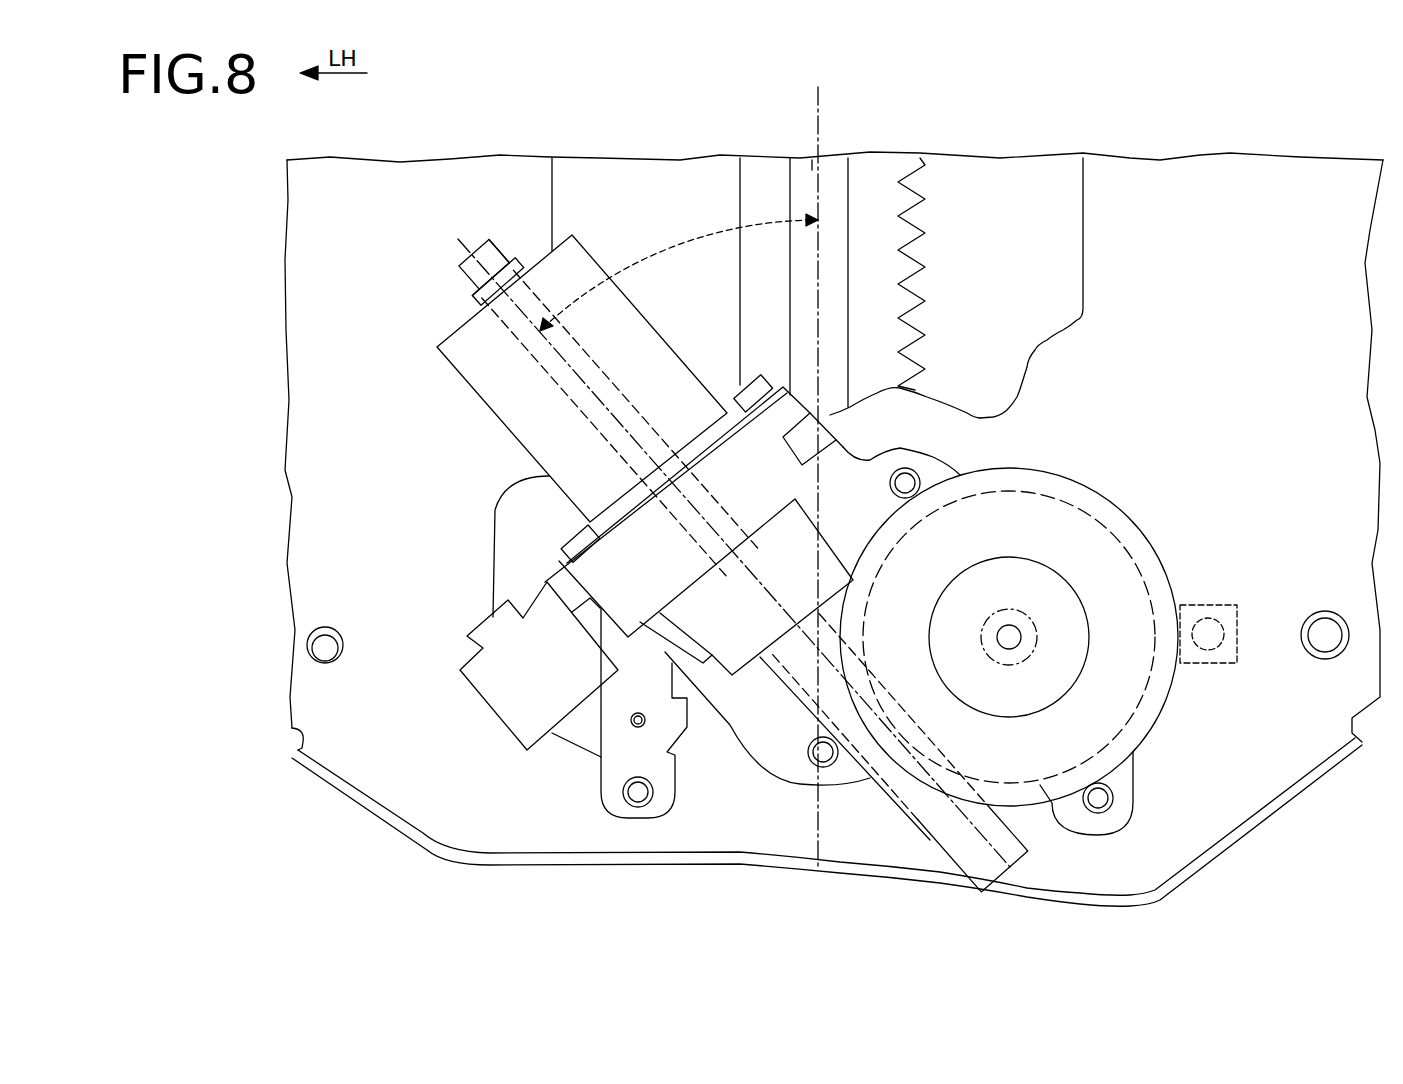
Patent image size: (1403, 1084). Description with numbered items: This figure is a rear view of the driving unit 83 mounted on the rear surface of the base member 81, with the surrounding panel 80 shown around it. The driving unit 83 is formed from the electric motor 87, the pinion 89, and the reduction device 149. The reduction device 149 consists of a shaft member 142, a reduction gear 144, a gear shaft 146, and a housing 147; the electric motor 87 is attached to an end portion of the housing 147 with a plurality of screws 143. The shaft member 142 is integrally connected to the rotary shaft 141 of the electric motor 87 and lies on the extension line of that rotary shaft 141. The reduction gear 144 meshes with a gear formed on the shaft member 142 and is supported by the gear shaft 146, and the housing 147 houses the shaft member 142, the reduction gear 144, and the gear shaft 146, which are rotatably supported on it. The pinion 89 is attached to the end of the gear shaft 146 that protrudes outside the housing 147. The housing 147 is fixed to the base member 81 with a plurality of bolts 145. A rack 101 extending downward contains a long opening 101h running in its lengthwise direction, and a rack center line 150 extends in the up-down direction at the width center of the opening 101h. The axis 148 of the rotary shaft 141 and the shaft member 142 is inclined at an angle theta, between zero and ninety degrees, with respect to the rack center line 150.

The door panel 80 is at (1274, 132).
The base member 81 is at (1168, 175).
The driving unit 83 is at (604, 242).
The electric motor 87 is at (540, 288).
The pinion 89 is at (990, 560).
The rack 101 is at (882, 150).
The long opening 101h is at (806, 163).
The rotary shaft 141 is at (553, 275).
The shaft member 142 is at (890, 800).
The screws 143 is at (768, 383).
The reduction gear 144 is at (1130, 720).
The bolts 145 is at (905, 478).
The gear shaft 146 is at (1010, 655).
The housing 147 is at (765, 757).
The axis 148 is at (632, 405).
The reduction device 149 is at (714, 670).
The rack center line 150 is at (822, 137).